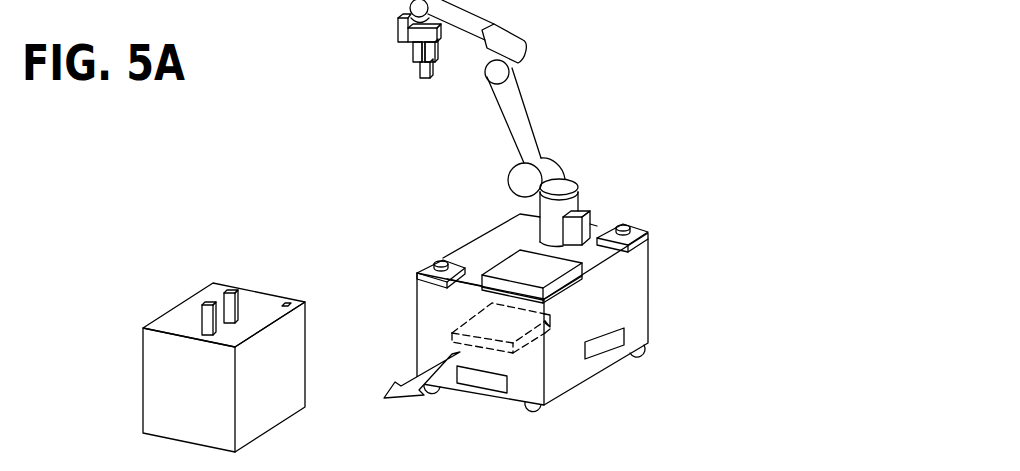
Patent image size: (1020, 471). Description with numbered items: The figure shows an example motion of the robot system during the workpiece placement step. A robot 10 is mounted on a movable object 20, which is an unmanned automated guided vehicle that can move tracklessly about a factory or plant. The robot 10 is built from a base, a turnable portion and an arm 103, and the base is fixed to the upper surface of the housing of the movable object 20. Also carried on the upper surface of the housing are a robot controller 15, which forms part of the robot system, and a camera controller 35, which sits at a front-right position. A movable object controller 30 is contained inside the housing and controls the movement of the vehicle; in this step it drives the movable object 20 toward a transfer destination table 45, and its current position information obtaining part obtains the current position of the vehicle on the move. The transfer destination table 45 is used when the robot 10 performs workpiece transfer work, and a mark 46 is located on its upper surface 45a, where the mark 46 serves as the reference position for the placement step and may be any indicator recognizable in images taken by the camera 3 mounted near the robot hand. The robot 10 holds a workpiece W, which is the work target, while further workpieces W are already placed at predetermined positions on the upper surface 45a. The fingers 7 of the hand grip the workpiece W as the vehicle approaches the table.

The camera 3 is at (397, 30).
The gripping fingers 7 is at (413, 51).
The workpiece W is at (426, 70).
The robot 10 is at (486, 123).
The arm 103 is at (509, 126).
The robot controller 15 is at (593, 218).
The movable object 20 is at (557, 295).
The camera controller 35 is at (560, 280).
The movable object controller 30 is at (537, 337).
The transfer destination table 45 is at (196, 349).
The upper surface of the transfer destination table 45a is at (178, 317).
The mark 46 is at (290, 301).